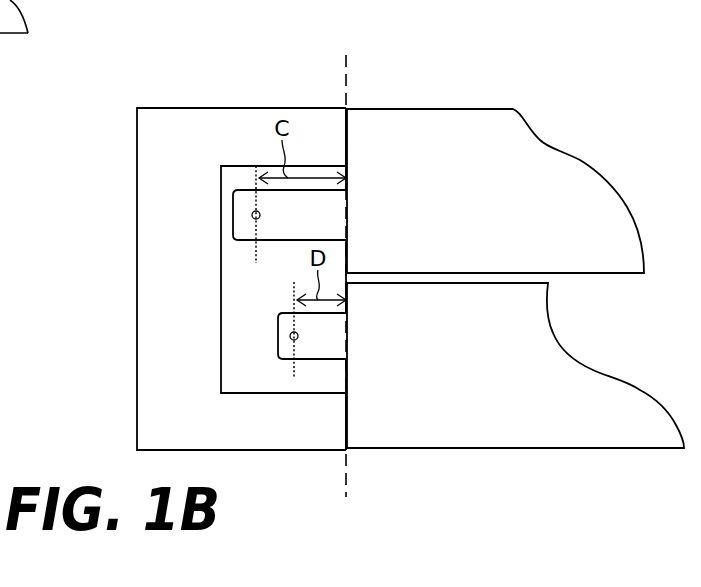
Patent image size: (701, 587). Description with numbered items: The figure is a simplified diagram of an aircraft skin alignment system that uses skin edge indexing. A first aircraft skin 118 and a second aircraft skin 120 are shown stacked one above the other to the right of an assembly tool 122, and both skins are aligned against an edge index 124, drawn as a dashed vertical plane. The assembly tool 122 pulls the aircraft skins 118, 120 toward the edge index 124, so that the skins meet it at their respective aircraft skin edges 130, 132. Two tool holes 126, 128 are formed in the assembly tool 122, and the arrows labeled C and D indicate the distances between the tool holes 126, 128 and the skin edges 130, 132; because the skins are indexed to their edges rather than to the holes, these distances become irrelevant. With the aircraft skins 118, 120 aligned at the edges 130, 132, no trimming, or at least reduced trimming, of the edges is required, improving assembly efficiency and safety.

The first aircraft skin 118 is at (513, 109).
The second aircraft skin 120 is at (530, 448).
The assembly tool 122 is at (189, 108).
The edge index 124 is at (345, 55).
The tool hole 126 is at (252, 215).
The tool hole 128 is at (290, 336).
The aircraft skin edge 130 is at (346, 137).
The aircraft skin edge 132 is at (346, 425).